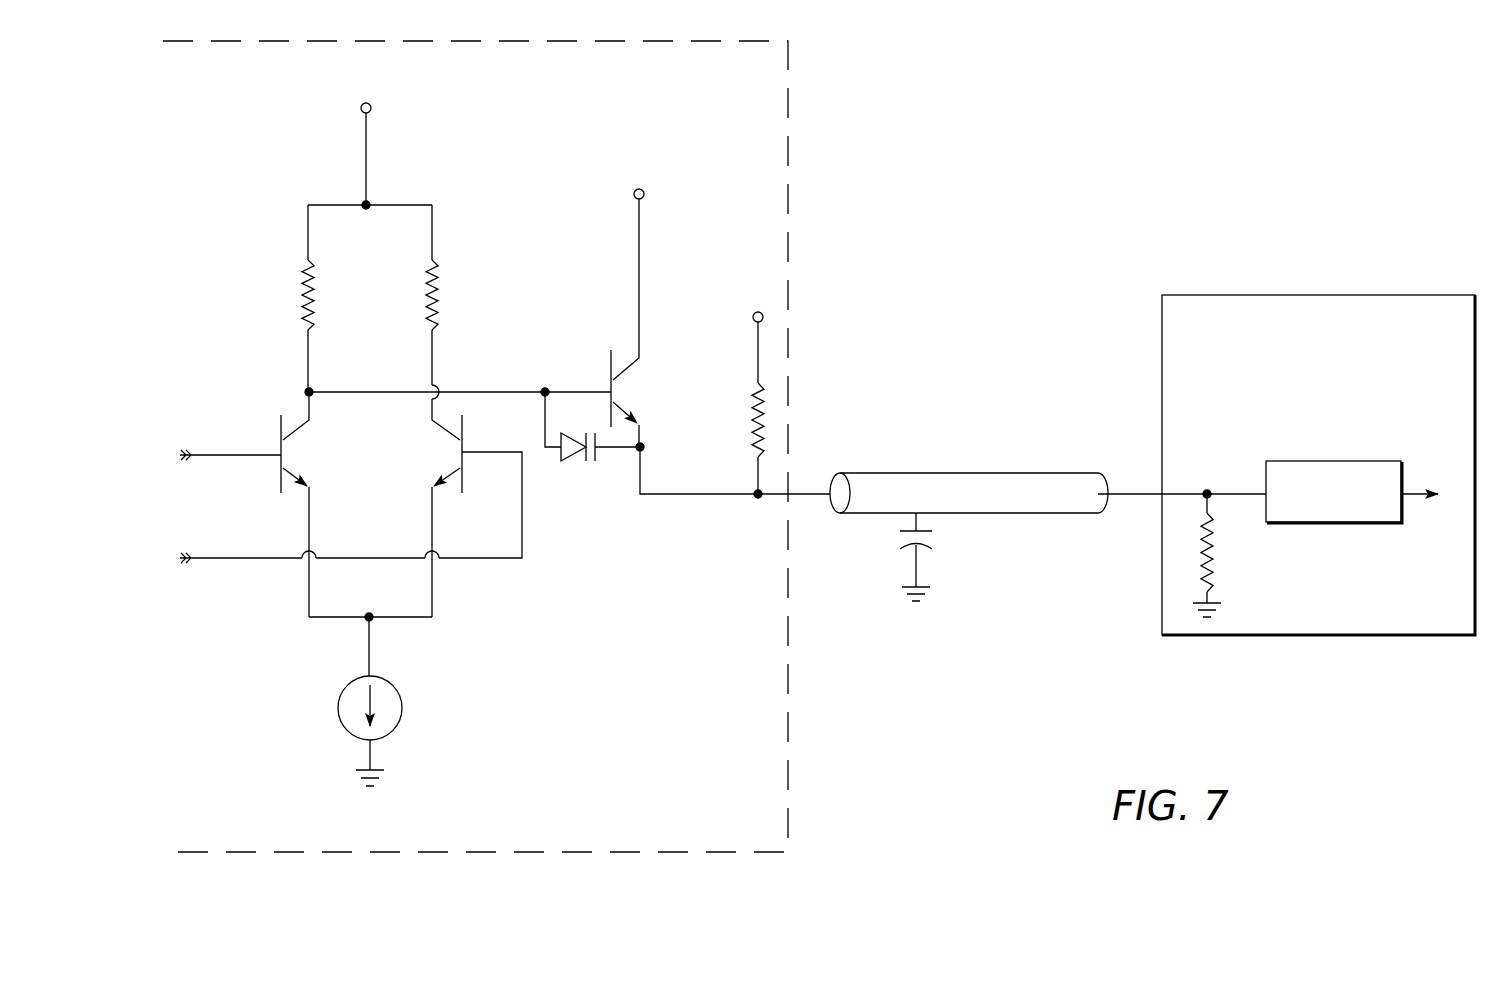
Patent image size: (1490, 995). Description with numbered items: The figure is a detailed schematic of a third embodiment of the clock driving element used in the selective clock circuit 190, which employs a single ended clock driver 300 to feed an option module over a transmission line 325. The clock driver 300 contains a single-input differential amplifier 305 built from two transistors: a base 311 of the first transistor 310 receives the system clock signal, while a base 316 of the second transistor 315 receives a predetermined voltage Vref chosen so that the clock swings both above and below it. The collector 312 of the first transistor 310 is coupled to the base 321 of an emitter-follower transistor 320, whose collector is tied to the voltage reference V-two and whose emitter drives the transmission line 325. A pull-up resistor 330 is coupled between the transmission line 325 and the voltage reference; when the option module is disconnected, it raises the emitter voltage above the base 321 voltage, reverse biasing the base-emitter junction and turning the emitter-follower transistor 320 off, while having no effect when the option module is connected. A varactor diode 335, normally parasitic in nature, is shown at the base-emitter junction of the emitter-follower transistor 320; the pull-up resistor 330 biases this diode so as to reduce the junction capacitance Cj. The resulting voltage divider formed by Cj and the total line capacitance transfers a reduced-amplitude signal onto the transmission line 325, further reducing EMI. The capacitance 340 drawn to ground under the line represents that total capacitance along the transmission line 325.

The clock driver 300 is at (663, 532).
The differential amplifier 305 is at (287, 650).
The first transistor 310 is at (320, 427).
The base of the first transistor 311 is at (217, 455).
The collector of the first transistor 312 is at (292, 428).
The second transistor 315 is at (428, 470).
The base of the second transistor 316 is at (257, 560).
The emitter-follower transistor 320 is at (652, 369).
The base of the emitter-follower transistor 321 is at (562, 390).
The transmission line 325 is at (885, 466).
The pull-up resistor 330 is at (782, 402).
The varactor diode 335 is at (569, 470).
The transmission line capacitance CT2 340 is at (936, 565).
The selective clock circuit 190 is at (842, 661).